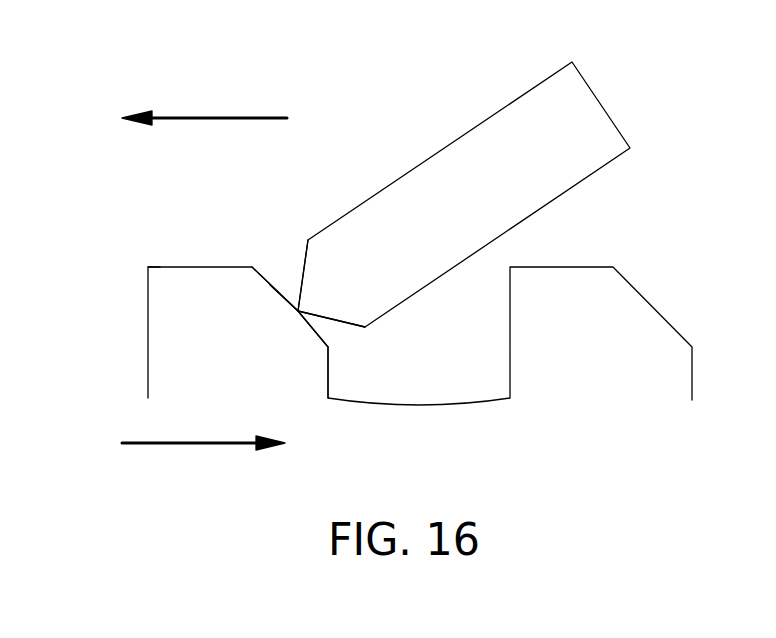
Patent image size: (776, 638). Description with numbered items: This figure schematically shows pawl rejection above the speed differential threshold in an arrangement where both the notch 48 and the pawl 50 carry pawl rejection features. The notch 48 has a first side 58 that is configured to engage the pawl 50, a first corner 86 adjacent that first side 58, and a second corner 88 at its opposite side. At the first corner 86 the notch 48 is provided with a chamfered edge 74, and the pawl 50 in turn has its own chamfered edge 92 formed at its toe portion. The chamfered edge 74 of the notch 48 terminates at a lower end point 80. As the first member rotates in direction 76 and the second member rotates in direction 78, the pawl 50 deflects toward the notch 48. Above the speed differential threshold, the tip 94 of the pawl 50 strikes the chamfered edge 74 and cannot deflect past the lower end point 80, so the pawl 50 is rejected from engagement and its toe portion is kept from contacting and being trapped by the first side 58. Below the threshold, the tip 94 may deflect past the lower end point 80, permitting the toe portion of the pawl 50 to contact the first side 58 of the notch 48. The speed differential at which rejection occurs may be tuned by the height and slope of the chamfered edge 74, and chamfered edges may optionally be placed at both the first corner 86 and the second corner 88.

The notch 48 is at (160, 345).
The pawl 50 is at (488, 130).
The first side 58 is at (328, 373).
The chamfered edge 74 is at (270, 292).
The direction 76 is at (203, 443).
The direction 78 is at (203, 118).
The lower end point 80 is at (328, 347).
The first corner 86 is at (279, 273).
The second corner 88 is at (148, 266).
The chamfered edge 92 is at (333, 318).
The tip 94 is at (299, 310).